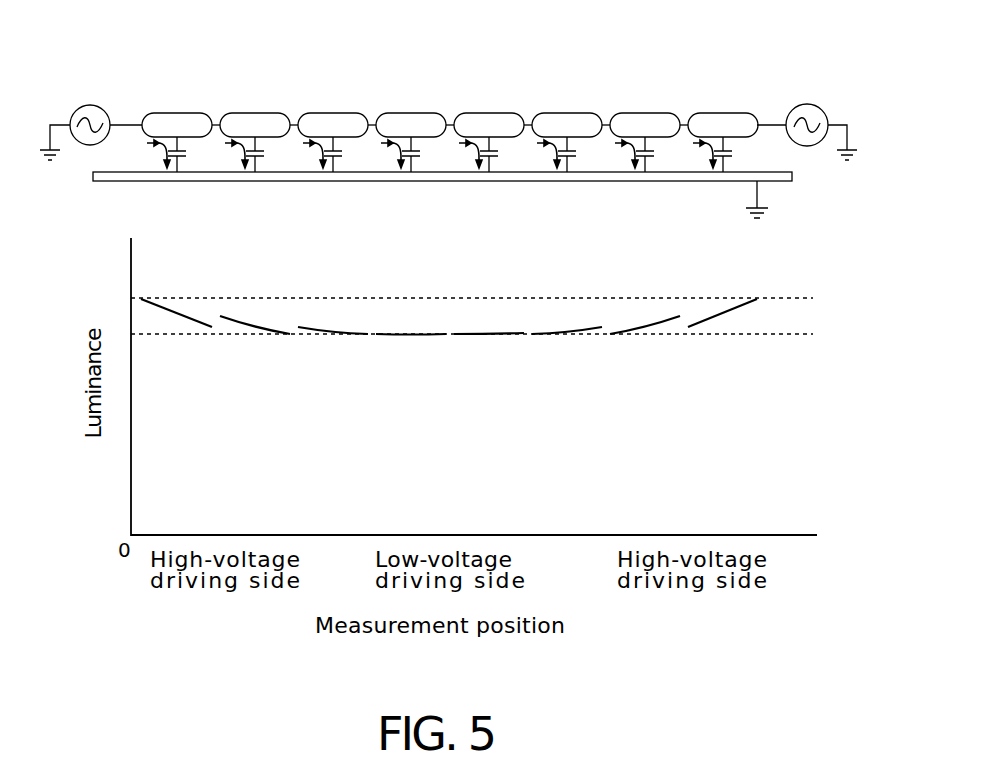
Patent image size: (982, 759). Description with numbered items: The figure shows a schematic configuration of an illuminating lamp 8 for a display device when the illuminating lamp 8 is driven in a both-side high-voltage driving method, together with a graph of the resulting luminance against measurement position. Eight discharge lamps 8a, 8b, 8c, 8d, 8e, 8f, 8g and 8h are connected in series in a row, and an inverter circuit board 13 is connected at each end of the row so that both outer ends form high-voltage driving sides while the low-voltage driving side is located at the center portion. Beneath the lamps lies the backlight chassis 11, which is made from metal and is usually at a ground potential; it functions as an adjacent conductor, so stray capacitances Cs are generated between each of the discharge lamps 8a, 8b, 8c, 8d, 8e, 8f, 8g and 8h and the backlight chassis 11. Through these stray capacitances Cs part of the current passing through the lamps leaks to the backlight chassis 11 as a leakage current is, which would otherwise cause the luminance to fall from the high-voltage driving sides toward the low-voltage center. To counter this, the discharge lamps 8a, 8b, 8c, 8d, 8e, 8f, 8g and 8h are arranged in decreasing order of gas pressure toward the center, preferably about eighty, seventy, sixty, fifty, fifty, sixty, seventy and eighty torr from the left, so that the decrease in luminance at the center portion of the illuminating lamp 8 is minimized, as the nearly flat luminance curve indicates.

The illuminating lamp 8 is at (444, 77).
The discharge lamp 8a is at (177, 113).
The discharge lamp 8b is at (255, 113).
The discharge lamp 8c is at (333, 113).
The discharge lamp 8d is at (411, 113).
The discharge lamp 8e is at (489, 113).
The discharge lamp 8f is at (567, 113).
The discharge lamp 8g is at (645, 113).
The discharge lamp 8h is at (723, 113).
The backlight chassis 11 is at (93, 178).
The inverter circuit board 13 is at (90, 105).
The stray capacitance Cs is at (180, 158).
The leakage current is is at (163, 157).